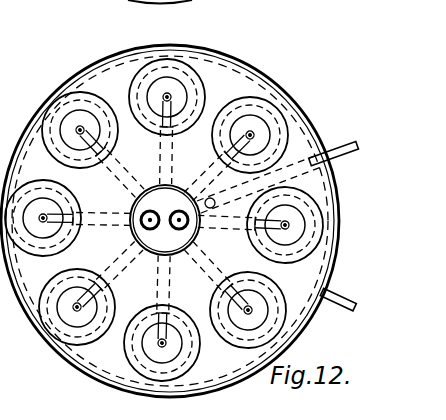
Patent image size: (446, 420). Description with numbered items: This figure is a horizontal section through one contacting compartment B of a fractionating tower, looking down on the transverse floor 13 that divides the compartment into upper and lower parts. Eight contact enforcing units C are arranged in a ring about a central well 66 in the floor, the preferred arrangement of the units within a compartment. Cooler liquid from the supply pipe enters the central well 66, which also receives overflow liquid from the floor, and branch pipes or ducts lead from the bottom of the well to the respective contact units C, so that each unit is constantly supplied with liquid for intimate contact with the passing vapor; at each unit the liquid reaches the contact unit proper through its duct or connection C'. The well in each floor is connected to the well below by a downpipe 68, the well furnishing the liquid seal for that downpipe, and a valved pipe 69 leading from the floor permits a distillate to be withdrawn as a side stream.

The transverse floor 13 is at (170, 221).
The contacting compartment B is at (165, 200).
The central well 66 is at (157, 210).
The downpipe 68 is at (172, 232).
The contact enforcing unit C is at (164, 220).
The duct or connection C' is at (102, 242).
The valved pipe 69 is at (277, 167).